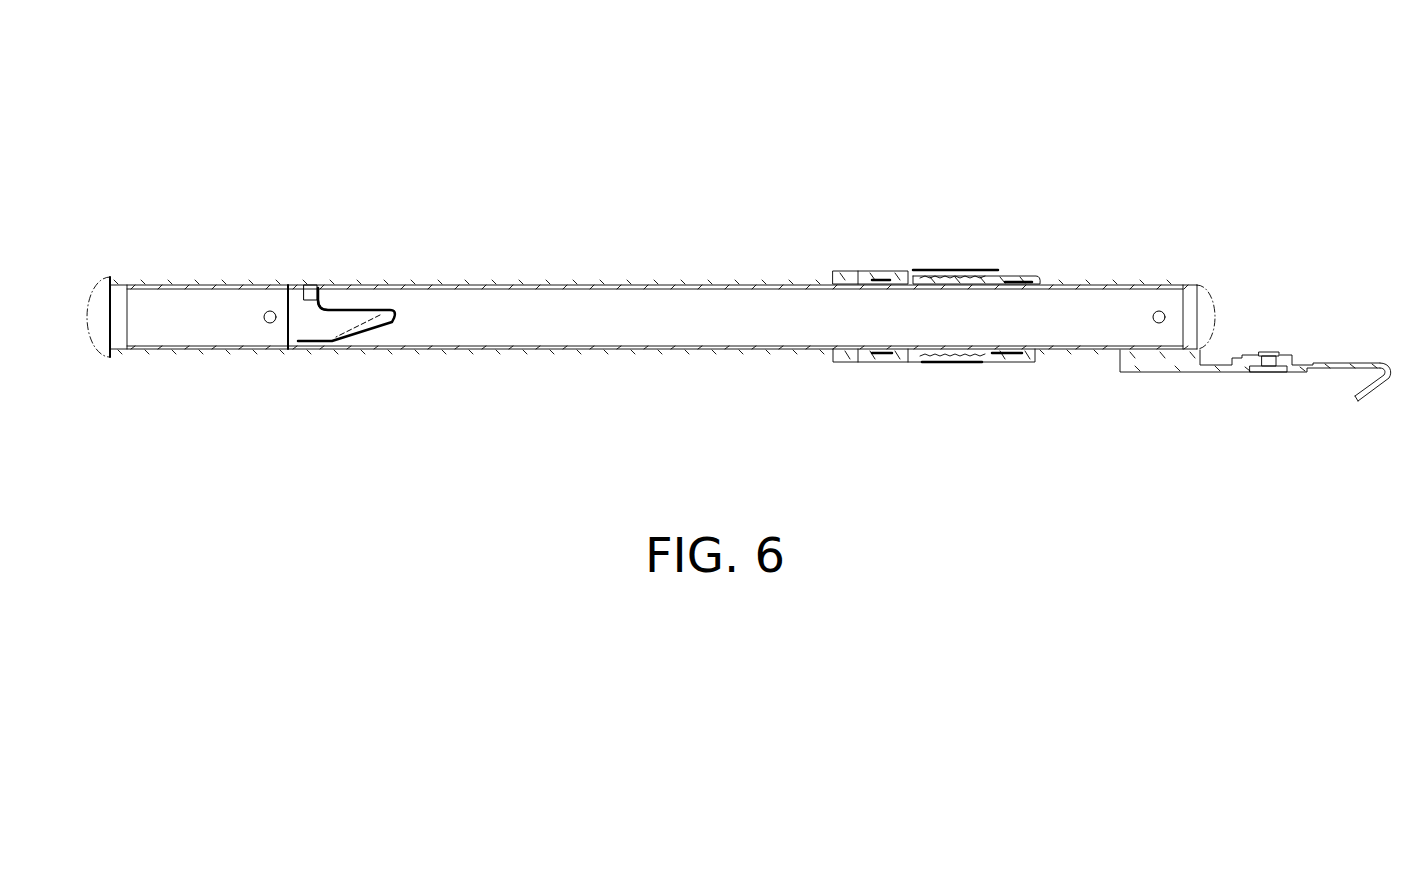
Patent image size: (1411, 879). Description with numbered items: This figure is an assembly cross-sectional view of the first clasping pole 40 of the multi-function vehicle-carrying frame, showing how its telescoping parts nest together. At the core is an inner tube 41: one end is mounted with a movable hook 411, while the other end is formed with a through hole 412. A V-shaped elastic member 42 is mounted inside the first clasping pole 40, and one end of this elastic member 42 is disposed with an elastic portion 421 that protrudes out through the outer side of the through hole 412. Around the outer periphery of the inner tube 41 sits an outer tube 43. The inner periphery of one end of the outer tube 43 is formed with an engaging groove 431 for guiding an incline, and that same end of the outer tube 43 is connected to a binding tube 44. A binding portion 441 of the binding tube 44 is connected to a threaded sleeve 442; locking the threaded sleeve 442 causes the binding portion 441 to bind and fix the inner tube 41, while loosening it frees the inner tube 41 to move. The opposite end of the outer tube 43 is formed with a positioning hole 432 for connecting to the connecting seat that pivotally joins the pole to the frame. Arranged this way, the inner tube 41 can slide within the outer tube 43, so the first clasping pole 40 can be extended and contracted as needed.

The first clasping pole 40 is at (93, 160).
The inner tube 41 is at (1090, 287).
The movable hook 411 is at (1307, 362).
The through hole 412 is at (307, 285).
The V-shaped elastic member 42 is at (352, 305).
The elastic portion 421 is at (317, 287).
The outer tube 43 is at (503, 350).
The engaging groove 431 is at (905, 364).
The positioning hole 432 is at (265, 322).
The binding tube 44 is at (873, 270).
The binding portion 441 is at (937, 268).
The threaded sleeve 442 is at (950, 272).